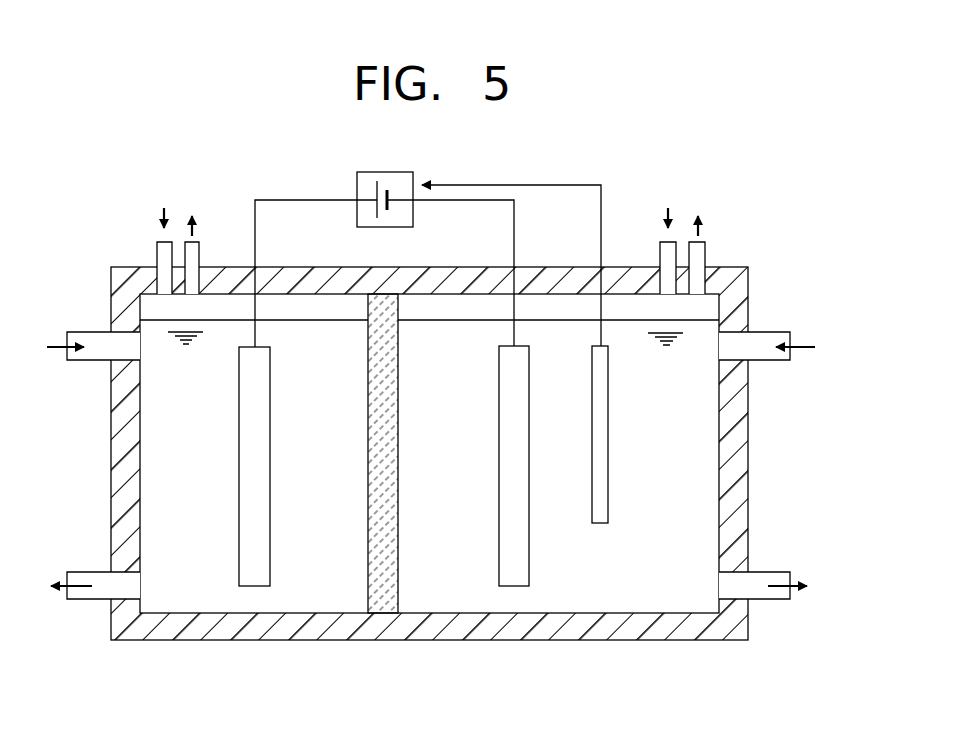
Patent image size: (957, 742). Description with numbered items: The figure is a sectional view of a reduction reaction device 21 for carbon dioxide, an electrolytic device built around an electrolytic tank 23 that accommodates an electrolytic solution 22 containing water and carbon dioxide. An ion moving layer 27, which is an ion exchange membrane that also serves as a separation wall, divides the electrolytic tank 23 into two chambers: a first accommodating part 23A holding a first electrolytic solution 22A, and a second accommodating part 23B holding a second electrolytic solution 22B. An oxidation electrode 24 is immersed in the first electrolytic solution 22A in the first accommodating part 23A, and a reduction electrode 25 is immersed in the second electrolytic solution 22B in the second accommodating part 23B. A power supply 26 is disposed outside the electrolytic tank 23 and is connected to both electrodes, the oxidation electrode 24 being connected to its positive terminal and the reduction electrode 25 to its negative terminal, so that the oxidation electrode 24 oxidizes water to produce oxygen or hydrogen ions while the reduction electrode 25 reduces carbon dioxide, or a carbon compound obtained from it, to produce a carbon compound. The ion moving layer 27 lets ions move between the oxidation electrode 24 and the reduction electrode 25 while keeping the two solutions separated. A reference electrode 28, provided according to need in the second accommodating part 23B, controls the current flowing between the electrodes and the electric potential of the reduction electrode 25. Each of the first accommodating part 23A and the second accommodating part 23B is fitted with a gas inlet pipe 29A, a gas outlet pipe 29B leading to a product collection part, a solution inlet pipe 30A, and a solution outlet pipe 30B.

The reduction reaction device 21 is at (469, 385).
The electrolytic solution 22 is at (700, 460).
The first electrolytic solution 22A is at (270, 600).
The second electrolytic solution 22B is at (580, 600).
The electrolytic tank 23 is at (733, 497).
The first accommodating part 23A is at (188, 616).
The second accommodating part 23B is at (498, 616).
The oxidation electrode 24 is at (239, 442).
The reduction electrode 25 is at (499, 443).
The power supply 26 is at (357, 183).
The ion moving layer 27 is at (386, 600).
The reference electrode 28 is at (608, 398).
The gas inlet pipe 29A is at (157, 250).
The gas outlet pipe 29B is at (200, 249).
The solution inlet pipe 30A is at (93, 332).
The solution outlet pipe 30B is at (95, 572).